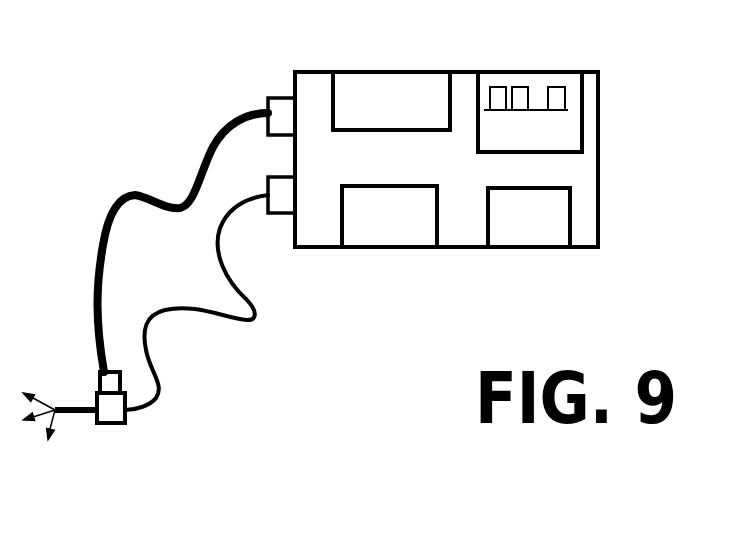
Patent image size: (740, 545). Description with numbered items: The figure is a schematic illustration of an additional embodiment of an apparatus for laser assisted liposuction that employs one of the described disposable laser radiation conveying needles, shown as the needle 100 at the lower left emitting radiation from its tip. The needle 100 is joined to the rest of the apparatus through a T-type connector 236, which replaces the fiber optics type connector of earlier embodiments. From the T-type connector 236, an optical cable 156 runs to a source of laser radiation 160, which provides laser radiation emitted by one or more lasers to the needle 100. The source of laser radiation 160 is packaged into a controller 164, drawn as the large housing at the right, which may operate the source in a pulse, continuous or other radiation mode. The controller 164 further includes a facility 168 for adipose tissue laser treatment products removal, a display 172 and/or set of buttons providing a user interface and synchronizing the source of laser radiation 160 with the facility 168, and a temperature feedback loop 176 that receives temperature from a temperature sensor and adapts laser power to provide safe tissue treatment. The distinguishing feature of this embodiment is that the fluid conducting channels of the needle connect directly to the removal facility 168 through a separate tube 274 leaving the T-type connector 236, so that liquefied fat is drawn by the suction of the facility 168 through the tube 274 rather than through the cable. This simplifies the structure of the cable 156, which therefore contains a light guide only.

The needle 100 is at (58, 387).
The optical cable 156 is at (237, 319).
The source of laser radiation 160 is at (393, 226).
The controller 164 is at (473, 238).
The facility for adipose tissue laser treatment products removal 168 is at (388, 90).
The display 172 is at (507, 90).
The temperature feedback loop 176 is at (559, 223).
The T-type connector 236 is at (107, 423).
The tube 274 is at (192, 190).